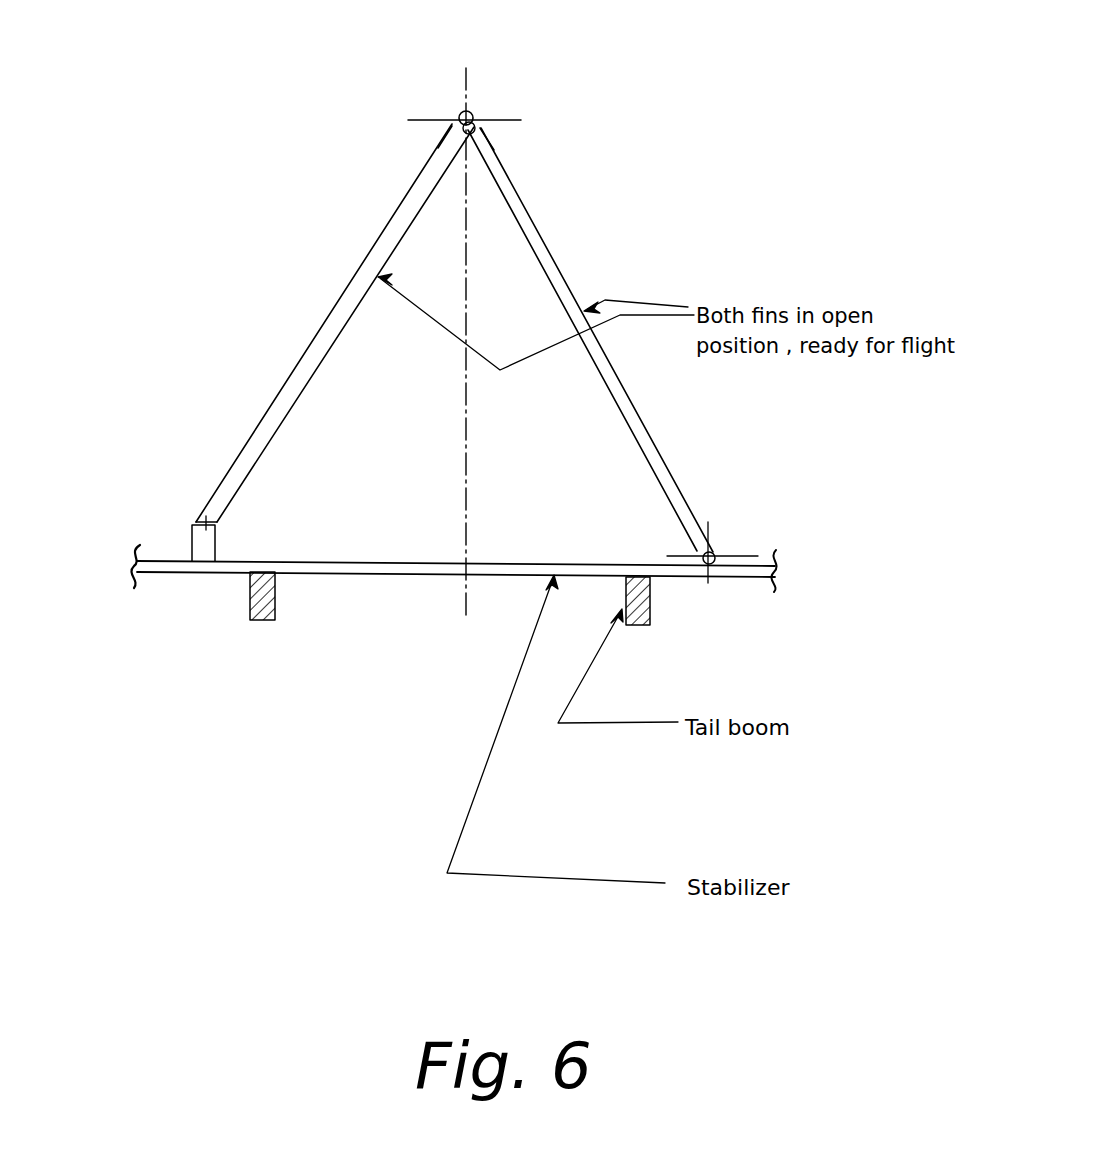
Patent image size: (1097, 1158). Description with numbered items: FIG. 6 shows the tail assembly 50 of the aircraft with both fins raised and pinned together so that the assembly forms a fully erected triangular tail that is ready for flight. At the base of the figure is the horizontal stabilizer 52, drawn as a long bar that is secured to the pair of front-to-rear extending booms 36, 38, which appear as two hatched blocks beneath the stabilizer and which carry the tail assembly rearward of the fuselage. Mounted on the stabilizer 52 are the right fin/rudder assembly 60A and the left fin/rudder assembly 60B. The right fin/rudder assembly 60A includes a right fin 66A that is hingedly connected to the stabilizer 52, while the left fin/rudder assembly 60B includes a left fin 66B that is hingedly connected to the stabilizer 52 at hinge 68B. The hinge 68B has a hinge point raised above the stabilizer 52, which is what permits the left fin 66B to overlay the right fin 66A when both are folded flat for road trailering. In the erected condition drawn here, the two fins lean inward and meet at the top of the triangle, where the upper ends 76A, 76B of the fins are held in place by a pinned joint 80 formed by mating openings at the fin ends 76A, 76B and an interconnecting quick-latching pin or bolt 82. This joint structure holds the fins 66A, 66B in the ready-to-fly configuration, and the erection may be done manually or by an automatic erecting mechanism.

The tail assembly 50 is at (700, 84).
The quick-latching pin 82 is at (470, 112).
The pinned joint 80 is at (473, 111).
The upper end of right fin 76A is at (495, 144).
The upper end of left fin 76B is at (430, 143).
The right fin/rudder assembly 60A is at (544, 259).
The left fin/rudder assembly 60B is at (340, 306).
The right fin 66A is at (656, 452).
The left fin 66B is at (300, 370).
The hinge 68B is at (164, 483).
The horizontal stabilizer 52 is at (405, 578).
The boom 38 is at (278, 604).
The boom 36 is at (652, 608).